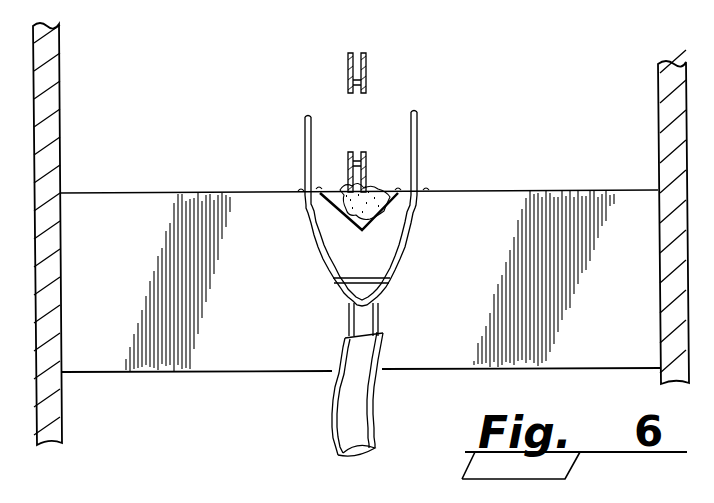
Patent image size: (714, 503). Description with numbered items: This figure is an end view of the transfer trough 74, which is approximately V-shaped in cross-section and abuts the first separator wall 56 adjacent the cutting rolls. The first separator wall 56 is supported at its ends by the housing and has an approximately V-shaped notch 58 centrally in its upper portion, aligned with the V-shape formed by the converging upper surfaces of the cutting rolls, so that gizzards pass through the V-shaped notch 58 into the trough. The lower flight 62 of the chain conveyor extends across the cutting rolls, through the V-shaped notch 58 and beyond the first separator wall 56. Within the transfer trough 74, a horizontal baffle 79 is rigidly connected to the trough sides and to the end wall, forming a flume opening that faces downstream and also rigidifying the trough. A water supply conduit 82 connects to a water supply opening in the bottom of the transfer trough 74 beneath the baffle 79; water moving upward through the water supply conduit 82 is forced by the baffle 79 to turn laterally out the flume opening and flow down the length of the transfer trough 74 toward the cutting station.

The first separator wall 56 is at (522, 198).
The V-shaped notch 58 is at (338, 192).
The lower flight 62 is at (366, 182).
The transfer trough 74 is at (418, 130).
The horizontal baffle 79 is at (367, 279).
The water supply conduit 82 is at (340, 408).